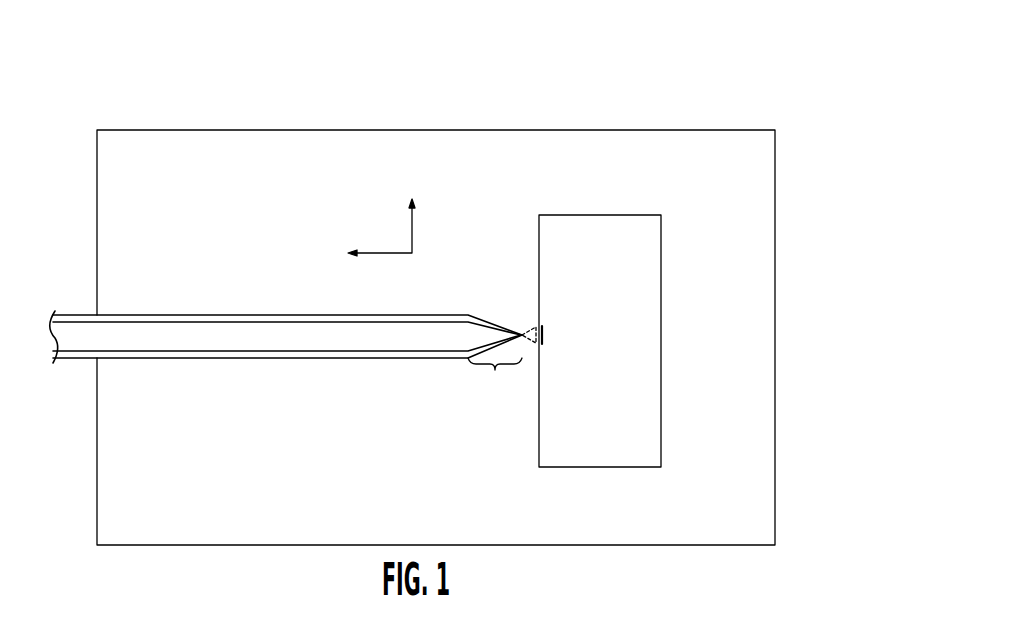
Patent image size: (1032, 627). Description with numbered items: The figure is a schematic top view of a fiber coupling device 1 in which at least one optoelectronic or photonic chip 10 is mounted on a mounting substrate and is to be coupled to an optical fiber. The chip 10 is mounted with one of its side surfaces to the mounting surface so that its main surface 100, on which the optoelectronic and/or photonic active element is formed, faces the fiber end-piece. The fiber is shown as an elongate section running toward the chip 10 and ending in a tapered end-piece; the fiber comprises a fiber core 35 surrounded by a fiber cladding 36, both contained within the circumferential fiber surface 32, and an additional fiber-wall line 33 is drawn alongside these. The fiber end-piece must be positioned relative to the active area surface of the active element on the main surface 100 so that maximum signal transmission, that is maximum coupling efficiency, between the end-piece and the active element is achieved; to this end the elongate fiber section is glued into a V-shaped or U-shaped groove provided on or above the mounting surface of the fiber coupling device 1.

The fiber coupling device 1 is at (613, 108).
The optoelectronic or photonic chip 10 is at (645, 404).
The circumferential fiber surface 32 is at (282, 357).
The outer wall 33 is at (368, 357).
The fiber core 35 is at (197, 338).
The fiber cladding 36 is at (147, 354).
The main surface 100 is at (539, 428).